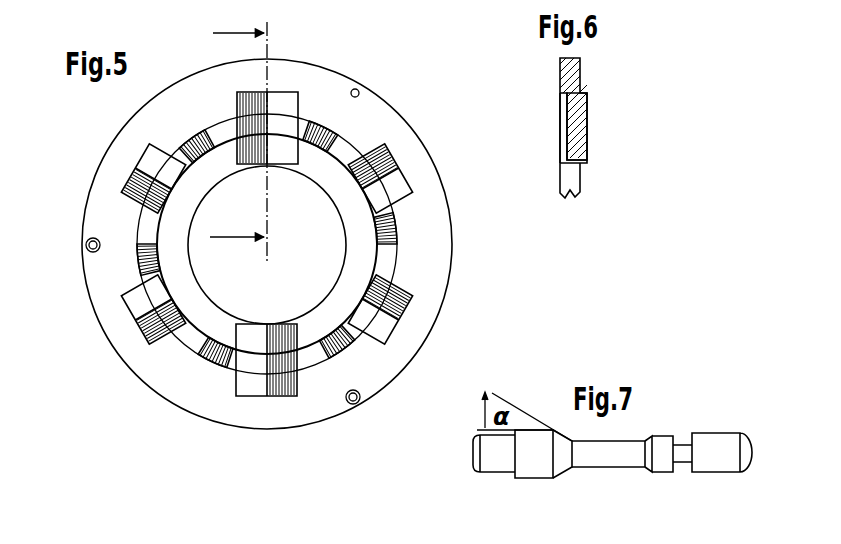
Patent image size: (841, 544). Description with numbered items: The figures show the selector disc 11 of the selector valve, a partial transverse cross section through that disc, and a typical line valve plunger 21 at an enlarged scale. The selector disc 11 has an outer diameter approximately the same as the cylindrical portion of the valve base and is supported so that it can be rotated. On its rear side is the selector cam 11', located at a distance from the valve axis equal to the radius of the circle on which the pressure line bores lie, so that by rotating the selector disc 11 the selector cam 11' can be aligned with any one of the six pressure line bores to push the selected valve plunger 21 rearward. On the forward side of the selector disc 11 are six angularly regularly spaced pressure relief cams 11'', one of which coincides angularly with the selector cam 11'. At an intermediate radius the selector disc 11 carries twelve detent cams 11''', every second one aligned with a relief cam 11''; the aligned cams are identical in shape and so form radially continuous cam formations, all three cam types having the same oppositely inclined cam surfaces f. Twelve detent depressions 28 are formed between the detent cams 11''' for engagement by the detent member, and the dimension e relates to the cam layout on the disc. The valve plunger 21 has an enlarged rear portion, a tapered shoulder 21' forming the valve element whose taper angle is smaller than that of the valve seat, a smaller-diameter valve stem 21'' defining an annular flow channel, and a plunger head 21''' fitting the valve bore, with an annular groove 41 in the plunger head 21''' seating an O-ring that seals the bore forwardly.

In FIG. 5, the selector disc 11 is at (233, 244).
In FIG. 6, the selector disc 11 is at (538, 126).
In FIG. 5, the selector cam 11' is at (267, 244).
In FIG. 6, the selector cam 11' is at (605, 129).
In FIG. 5, the pressure relief cam 11'' is at (266, 189).
In FIG. 6, the pressure relief cam 11'' is at (611, 123).
In FIG. 5, the detent cam 11''' is at (277, 407).
In FIG. 5, the detent depression 28 is at (348, 163).
In FIG. 5, the pole width dimension e is at (268, 130).
In FIG. 5, the cam surfaces f is at (397, 238).
In FIG. 7, the valve plunger 21 is at (513, 482).
In FIG. 7, the tapered shoulder 21' is at (572, 482).
In FIG. 7, the valve stem 21'' is at (610, 488).
In FIG. 7, the plunger head 21''' is at (698, 484).
In FIG. 7, the annular groove 41 is at (688, 448).